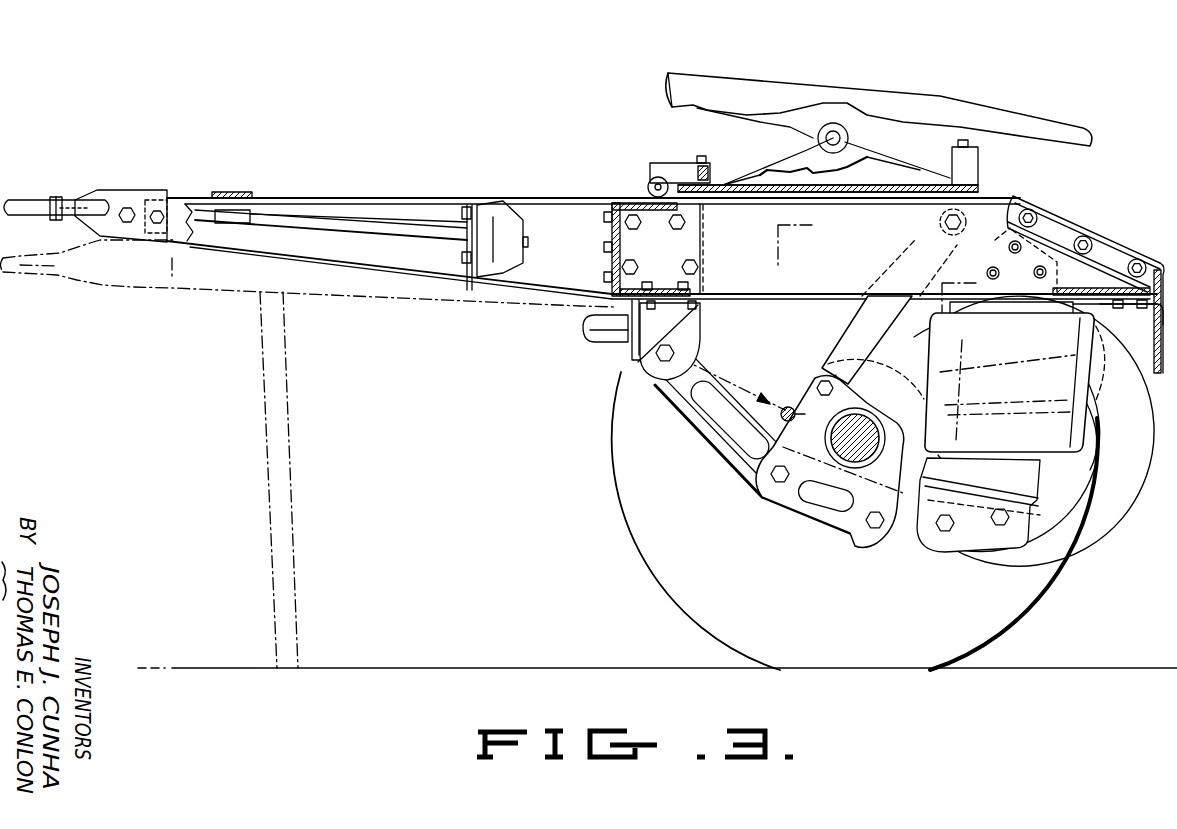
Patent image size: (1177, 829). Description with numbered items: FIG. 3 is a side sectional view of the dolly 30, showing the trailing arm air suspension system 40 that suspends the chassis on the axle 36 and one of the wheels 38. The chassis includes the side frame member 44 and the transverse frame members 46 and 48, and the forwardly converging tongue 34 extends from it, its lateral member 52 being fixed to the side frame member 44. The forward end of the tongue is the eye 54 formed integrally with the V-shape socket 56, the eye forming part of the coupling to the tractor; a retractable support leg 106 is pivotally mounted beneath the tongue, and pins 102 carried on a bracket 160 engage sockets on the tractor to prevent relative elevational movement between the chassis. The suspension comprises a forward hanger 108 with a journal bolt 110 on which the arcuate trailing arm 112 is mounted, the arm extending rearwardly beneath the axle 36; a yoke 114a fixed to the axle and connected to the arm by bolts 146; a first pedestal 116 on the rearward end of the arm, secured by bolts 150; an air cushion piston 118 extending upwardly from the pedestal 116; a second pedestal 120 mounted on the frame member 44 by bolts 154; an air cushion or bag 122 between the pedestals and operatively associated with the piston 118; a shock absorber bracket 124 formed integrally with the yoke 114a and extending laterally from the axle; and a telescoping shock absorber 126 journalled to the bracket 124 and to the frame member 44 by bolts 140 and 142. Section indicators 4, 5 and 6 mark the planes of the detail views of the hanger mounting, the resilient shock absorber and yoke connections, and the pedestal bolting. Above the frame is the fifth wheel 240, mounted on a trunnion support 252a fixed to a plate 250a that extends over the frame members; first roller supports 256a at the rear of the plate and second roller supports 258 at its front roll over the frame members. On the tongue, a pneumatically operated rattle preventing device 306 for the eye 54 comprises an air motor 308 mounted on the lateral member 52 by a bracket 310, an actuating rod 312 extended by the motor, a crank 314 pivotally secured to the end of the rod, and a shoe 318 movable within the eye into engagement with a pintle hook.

The dolly 30 is at (946, 84).
The tongue 34 is at (392, 190).
The axle 36 is at (853, 420).
The wheels 38 is at (638, 536).
The trailing arm air suspension system 40 is at (1106, 441).
The side frame member 44 is at (1010, 214).
The transverse frame member 46 is at (612, 228).
The transverse frame member 48 is at (1162, 260).
The lateral member 52 is at (410, 257).
The eye 54 is at (25, 198).
The V-shape socket 56 is at (138, 191).
The pins 102 is at (583, 332).
The retractable support leg 106 is at (268, 490).
The forward hanger 108 is at (647, 372).
The journal bolt 110 is at (674, 352).
The trailing arm 112 is at (745, 470).
The yoke 114a is at (845, 547).
The first pedestal 116 is at (1000, 540).
The air cushion piston 118 is at (1033, 484).
The second pedestal 120 is at (1093, 340).
The air cushion or bag 122 is at (1079, 391).
The shock absorber bracket 124 is at (812, 402).
The telescoping shock absorber 126 is at (898, 254).
The bolt 140 is at (945, 225).
The bolt 142 is at (823, 380).
The bolts 146 is at (775, 478).
The bolts 150 is at (1010, 520).
The bolts 154 is at (1038, 266).
The bracket 160 is at (630, 366).
The fifth wheel 240 is at (740, 82).
The plate 250a is at (875, 183).
The trunnion support 252a is at (887, 167).
The first roller supports 256a is at (980, 147).
The second roller supports 258 is at (650, 172).
The rattle preventing device 306 is at (300, 210).
The air motor 308 is at (501, 210).
The bracket 310 is at (467, 205).
The actuating rod 312 is at (342, 228).
The crank 314 is at (232, 224).
The shoe 318 is at (55, 197).
The section line 4- 4 is at (655, 122).
The section line 5- 5 is at (942, 167).
The section line 6- 6 is at (983, 182).